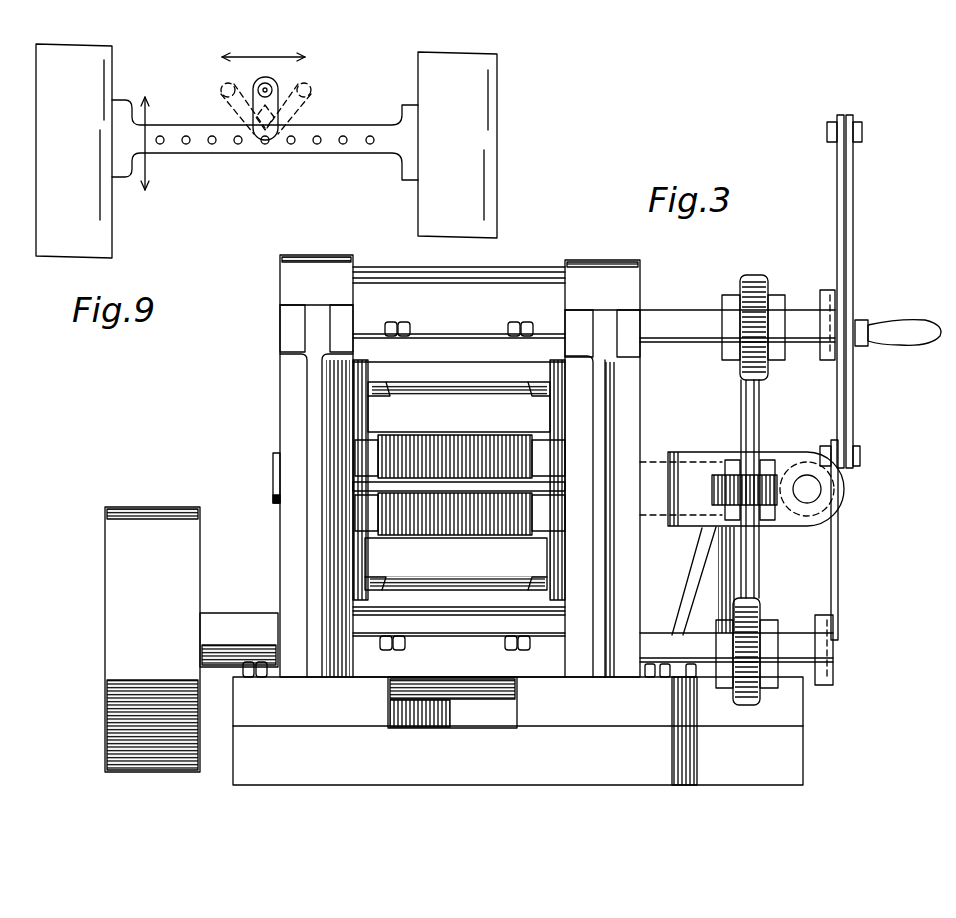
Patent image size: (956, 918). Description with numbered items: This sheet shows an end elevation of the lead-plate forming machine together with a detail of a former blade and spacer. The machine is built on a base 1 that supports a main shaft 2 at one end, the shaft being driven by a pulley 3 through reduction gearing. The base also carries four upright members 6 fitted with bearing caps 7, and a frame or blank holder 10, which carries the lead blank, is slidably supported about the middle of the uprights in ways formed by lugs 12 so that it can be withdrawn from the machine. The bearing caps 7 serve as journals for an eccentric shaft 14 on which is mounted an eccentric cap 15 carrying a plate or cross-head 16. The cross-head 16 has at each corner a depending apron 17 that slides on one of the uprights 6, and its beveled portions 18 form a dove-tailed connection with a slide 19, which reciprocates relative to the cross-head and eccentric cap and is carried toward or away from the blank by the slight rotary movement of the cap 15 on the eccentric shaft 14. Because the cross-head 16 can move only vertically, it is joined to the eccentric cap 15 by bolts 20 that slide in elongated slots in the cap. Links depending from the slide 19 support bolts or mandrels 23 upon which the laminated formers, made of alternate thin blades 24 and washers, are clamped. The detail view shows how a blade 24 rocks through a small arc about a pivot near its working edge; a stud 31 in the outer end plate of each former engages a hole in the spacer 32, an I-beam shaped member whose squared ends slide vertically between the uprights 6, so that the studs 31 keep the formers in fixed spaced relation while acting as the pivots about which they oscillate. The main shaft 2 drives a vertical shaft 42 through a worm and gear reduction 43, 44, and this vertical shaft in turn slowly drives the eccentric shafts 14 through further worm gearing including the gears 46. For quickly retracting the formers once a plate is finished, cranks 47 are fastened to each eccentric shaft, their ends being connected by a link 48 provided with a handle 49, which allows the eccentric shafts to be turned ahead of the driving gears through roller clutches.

In FIG. 3, the base 1 is at (608, 722).
In FIG. 3, the shaft 2 is at (274, 464).
In FIG. 3, the pulley 3 is at (170, 509).
In FIG. 3, the upright members 6 is at (285, 375).
In FIG. 9, the upright members 6 is at (112, 226).
In FIG. 3, the bearing caps 7 is at (331, 263).
In FIG. 3, the frame or blank holder 10 is at (358, 448).
In FIG. 3, the lugs 12 is at (348, 462).
In FIG. 3, the eccentric shaft 14 is at (693, 320).
In FIG. 3, the eccentric cap 15 is at (532, 280).
In FIG. 3, the plate or cross-head 16 is at (385, 362).
In FIG. 3, the depending apron 17 is at (368, 402).
In FIG. 3, the beveled portions 18 is at (395, 395).
In FIG. 3, the slide 19 is at (458, 486).
In FIG. 3, the bolts 20 is at (510, 330).
In FIG. 9, the bolts or mandrels 23 is at (290, 80).
In FIG. 3, the blades 24 is at (392, 502).
In FIG. 9, the blades 24 is at (267, 142).
In FIG. 9, the stud 31 is at (327, 136).
In FIG. 9, the spacer 32 is at (168, 122).
In FIG. 3, the vertical shaft 42 is at (760, 394).
In FIG. 3, the worm 43 is at (803, 470).
In FIG. 3, the gear 44 is at (760, 495).
In FIG. 3, the gear 46 is at (767, 284).
In FIG. 3, the cranks 47 is at (837, 218).
In FIG. 3, the link 48 is at (853, 368).
In FIG. 3, the handle 49 is at (894, 332).